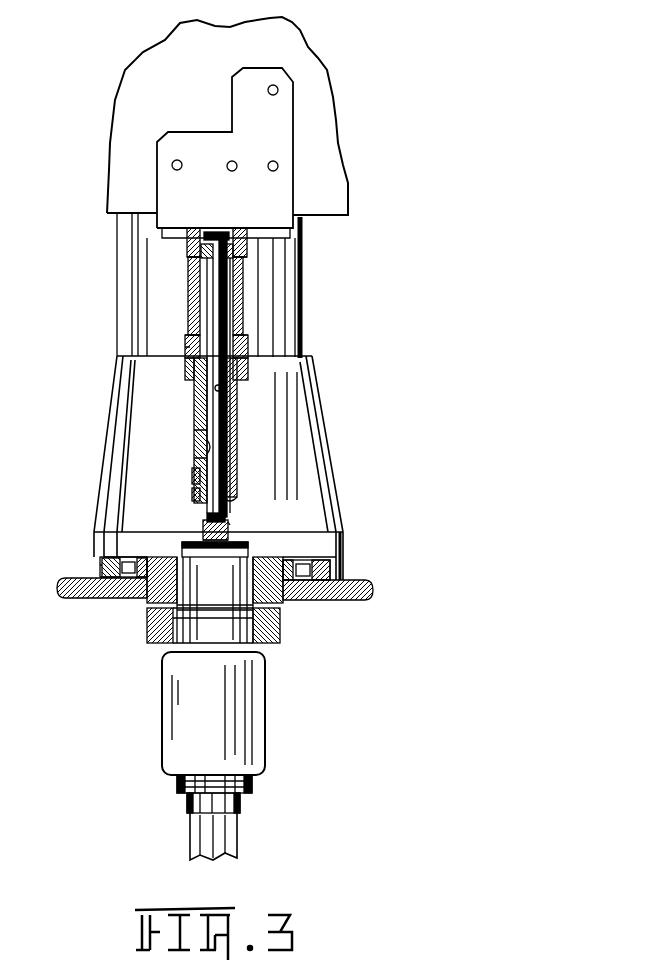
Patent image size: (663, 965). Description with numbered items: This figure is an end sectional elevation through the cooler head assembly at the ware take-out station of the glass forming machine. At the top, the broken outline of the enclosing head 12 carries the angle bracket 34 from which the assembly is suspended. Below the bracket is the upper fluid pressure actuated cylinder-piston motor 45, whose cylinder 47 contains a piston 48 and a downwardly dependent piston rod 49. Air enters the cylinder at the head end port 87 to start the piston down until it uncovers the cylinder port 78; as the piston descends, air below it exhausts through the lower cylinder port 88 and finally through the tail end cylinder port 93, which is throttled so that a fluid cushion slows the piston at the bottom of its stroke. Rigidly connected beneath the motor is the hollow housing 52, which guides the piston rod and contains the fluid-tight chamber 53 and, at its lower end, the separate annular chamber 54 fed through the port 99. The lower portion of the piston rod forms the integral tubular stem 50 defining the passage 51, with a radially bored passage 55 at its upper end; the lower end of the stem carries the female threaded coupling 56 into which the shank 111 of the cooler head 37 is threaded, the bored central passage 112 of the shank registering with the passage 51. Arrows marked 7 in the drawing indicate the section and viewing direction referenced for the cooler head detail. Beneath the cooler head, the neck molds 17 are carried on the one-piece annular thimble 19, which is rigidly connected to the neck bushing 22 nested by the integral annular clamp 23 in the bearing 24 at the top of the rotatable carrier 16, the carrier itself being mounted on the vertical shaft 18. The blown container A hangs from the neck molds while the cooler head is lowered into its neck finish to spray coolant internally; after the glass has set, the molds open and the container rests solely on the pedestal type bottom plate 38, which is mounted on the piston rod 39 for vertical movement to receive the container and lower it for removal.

The enclosing head 12 is at (184, 91).
The angle bracket 34 is at (273, 140).
The vertical shaft 18 is at (293, 293).
The head end port 87 is at (187, 248).
The cylinder port 78 is at (247, 253).
The piston 48 is at (193, 265).
The piston rod 49 is at (219, 282).
The cylinder 47 is at (207, 297).
The cylinder-piston motor 45 is at (193, 310).
The tail end cylinder port 93 is at (188, 347).
The lower cylinder port 88 is at (248, 345).
The radially bored passage 55 is at (216, 390).
The tubular stem 50 is at (215, 418).
The hollow housing 52 is at (202, 430).
The fluid-tight chamber 53 is at (212, 447).
The port 99 is at (198, 482).
The annular chamber 54 is at (200, 493).
The passage 51 is at (210, 513).
The direction arrow 7 is at (235, 521).
The female threaded coupling 56 is at (230, 525).
The bored central passage 112 is at (205, 523).
The shank 111 is at (207, 537).
The cooler head 37 is at (176, 542).
The neck bushing 22 is at (148, 598).
The annular clamp 23 is at (117, 555).
The bearing 24 is at (100, 565).
The rotatable carrier 16 is at (367, 582).
The neck molds 17 is at (150, 633).
The annular thimble 19 is at (267, 612).
The container A is at (238, 700).
The bottom plate 38 is at (177, 785).
The piston rod 39 is at (210, 830).